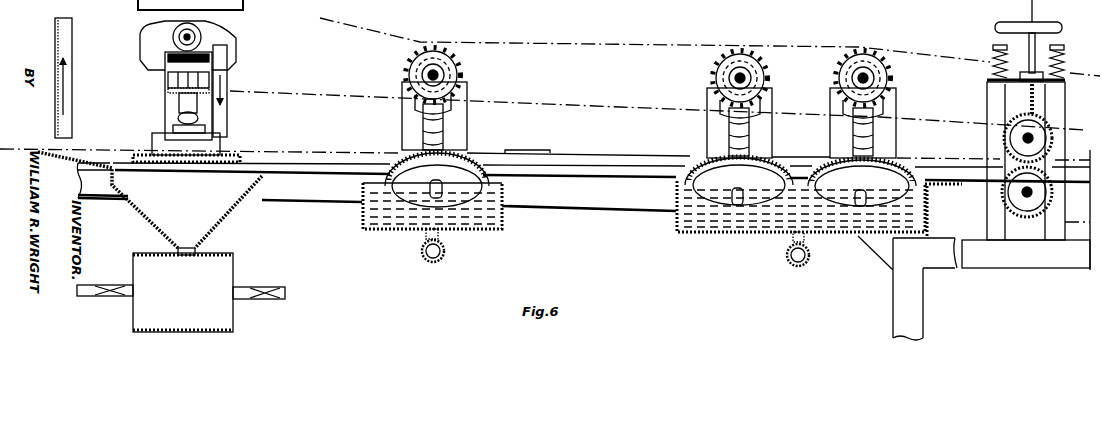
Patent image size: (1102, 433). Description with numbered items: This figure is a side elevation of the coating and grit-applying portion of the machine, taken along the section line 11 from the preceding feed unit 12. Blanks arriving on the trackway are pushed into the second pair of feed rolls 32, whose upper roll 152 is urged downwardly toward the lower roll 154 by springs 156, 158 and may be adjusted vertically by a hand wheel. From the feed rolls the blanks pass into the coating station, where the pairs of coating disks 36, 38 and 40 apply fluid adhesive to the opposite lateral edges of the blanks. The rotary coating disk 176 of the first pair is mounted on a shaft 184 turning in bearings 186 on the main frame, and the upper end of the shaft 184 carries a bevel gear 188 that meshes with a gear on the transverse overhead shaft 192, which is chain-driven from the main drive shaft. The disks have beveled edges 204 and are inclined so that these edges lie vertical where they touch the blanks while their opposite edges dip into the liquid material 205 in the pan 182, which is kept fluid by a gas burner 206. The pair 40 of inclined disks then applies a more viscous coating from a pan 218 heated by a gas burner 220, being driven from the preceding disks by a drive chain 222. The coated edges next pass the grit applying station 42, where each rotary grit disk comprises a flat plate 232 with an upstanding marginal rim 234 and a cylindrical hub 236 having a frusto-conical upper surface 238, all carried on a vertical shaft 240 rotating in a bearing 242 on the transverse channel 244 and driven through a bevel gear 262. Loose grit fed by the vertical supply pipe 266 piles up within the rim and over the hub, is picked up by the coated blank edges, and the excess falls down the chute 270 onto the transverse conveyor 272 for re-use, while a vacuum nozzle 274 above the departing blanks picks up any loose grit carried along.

The section line 11 is at (925, 0).
The feed unit 12 is at (277, 12).
The second pair of feed rolls 32 is at (1022, 273).
The first pair of coating disks 36 is at (857, 247).
The second pair of coating disks 38 is at (717, 272).
The pair of inclined coating disks 40 is at (428, 275).
The hopper station 42 is at (293, 252).
The upper roll 152 is at (1005, 128).
The lower roll 154 is at (1002, 197).
The spring 156 is at (1068, 62).
The spring 158 is at (1000, 62).
The rotary coating disk 176 is at (820, 158).
The pan 182 is at (712, 235).
The shaft 184 is at (839, 98).
The bearings 186 is at (872, 134).
The bevel gear 188 is at (882, 108).
The transverse overhead shaft 192 is at (858, 76).
The beveled edges 204 is at (698, 162).
The liquid material 205 is at (757, 227).
The gas burner 206 is at (803, 267).
The pan 218 is at (502, 220).
The gas burner 220 is at (446, 250).
The drive chain 222 is at (600, 42).
The flat plate 232 is at (172, 165).
The marginal rim 234 is at (240, 160).
The cylindrical hub 236 is at (152, 157).
The frusto-conical upper surface 238 is at (158, 135).
The shaft 240 is at (200, 121).
The bearing 242 is at (197, 108).
The transverse channel 244 is at (167, 85).
The bevel gear 262 is at (200, 52).
The vertical supply pipe 266 is at (230, 80).
The chute 270 is at (232, 208).
The transverse conveyor 272 is at (150, 253).
The vacuum nozzle 274 is at (55, 38).